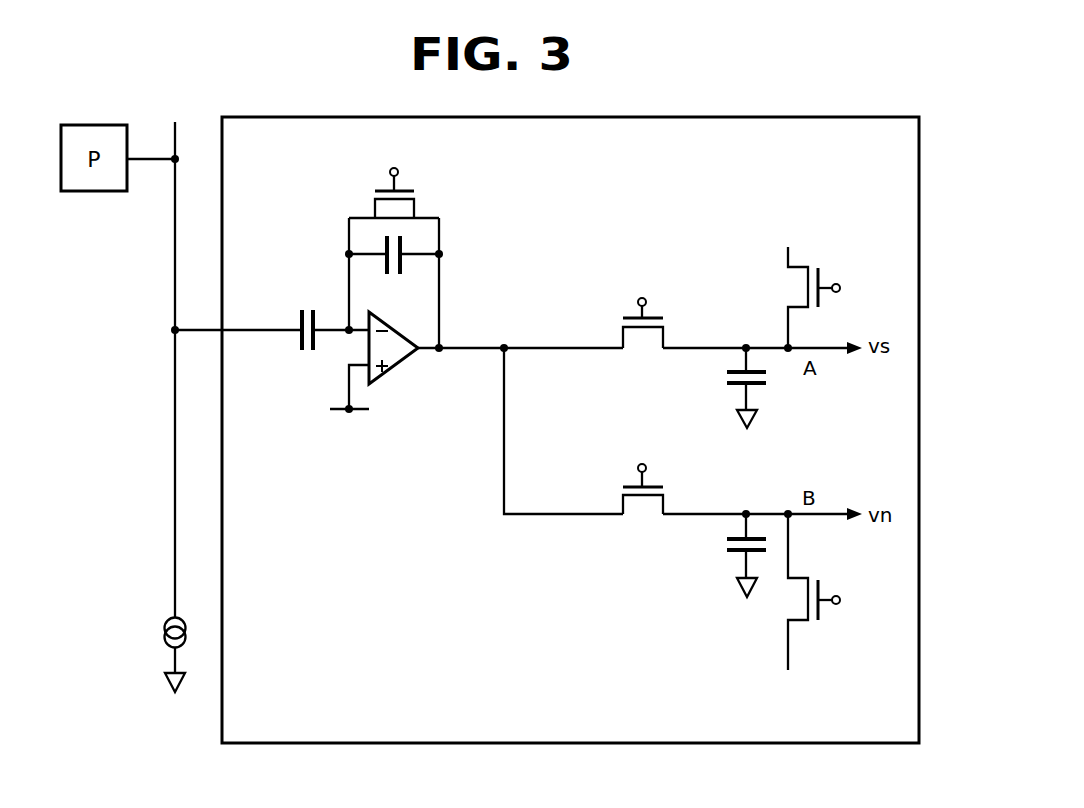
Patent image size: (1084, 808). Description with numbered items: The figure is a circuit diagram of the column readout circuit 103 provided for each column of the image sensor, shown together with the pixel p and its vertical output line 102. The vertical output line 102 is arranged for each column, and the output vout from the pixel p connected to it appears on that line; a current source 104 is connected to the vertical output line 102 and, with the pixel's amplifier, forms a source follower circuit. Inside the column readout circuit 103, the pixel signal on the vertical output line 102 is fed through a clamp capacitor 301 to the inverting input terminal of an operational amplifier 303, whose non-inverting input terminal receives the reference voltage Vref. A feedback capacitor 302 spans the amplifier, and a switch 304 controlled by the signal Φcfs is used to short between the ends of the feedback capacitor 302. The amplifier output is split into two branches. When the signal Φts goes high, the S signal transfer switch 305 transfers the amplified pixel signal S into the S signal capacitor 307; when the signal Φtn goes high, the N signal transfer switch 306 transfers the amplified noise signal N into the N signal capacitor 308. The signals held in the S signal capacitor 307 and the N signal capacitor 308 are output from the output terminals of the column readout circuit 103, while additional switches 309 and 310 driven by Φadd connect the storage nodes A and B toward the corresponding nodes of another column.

The vertical output line 102 is at (177, 132).
The column readout circuit 103 is at (864, 117).
The current source 104 is at (163, 630).
The clamp capacitor 301 is at (305, 350).
The feedback capacitor 302 is at (407, 245).
The operational amplifier 303 is at (395, 365).
The switch 304 is at (408, 179).
The S signal transfer switch 305 is at (643, 344).
The N signal transfer switch 306 is at (643, 512).
The S signal capacitor 307 is at (722, 378).
The N signal capacitor 308 is at (722, 547).
The addition switch (node A) 309 is at (792, 287).
The addition switch (node B) 310 is at (793, 603).